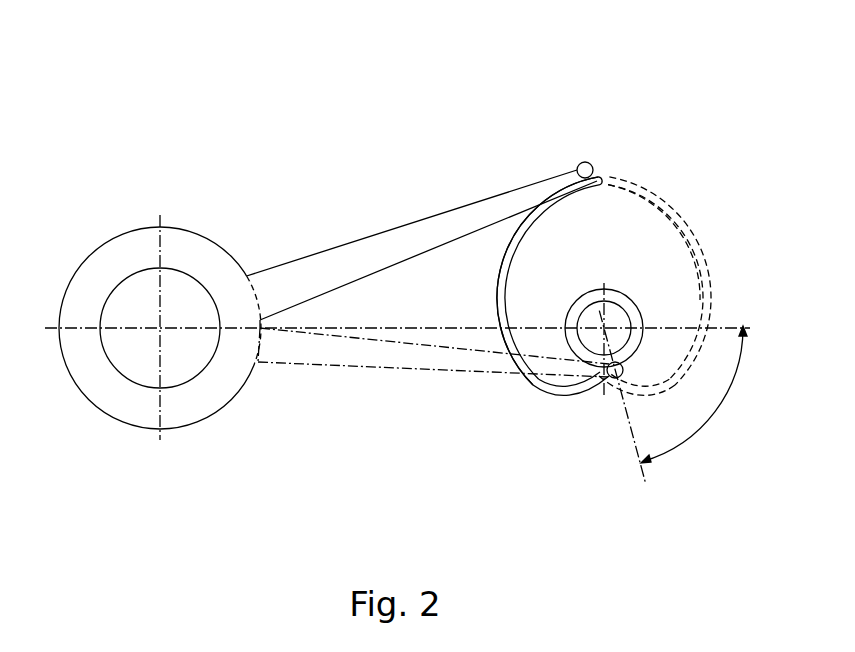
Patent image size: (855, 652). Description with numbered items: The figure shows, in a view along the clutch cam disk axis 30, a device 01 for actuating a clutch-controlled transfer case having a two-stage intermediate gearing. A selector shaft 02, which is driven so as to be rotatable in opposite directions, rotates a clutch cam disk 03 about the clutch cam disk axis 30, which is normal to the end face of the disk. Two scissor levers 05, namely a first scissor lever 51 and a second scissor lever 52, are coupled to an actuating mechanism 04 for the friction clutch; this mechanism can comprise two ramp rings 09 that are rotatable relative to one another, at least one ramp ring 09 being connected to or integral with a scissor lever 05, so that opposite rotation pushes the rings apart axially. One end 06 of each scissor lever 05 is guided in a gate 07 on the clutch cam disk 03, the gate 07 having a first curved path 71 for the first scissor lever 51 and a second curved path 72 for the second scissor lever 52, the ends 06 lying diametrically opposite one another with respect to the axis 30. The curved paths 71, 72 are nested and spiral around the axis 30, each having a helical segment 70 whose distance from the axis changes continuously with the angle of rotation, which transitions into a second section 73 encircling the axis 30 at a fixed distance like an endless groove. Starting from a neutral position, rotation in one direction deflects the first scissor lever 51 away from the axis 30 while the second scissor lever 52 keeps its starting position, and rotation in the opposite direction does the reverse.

The device for actuating a clutch-controlled transfer case 01 is at (105, 100).
The selector shaft 02 is at (592, 338).
The clutch cam disk 03 is at (610, 322).
The actuating mechanism 04 is at (97, 280).
The scissor lever 05 is at (424, 312).
The end of scissor lever 06 is at (592, 163).
The gate 07 is at (487, 302).
The ramp ring 09 is at (135, 255).
The clutch cam disk axis 30 is at (693, 306).
The first scissor lever 51 is at (336, 355).
The second scissor lever 52 is at (345, 246).
The helical segment 70 is at (520, 242).
The first curved path 71 is at (645, 196).
The second curved path 72 is at (545, 215).
The second section 73 is at (645, 274).